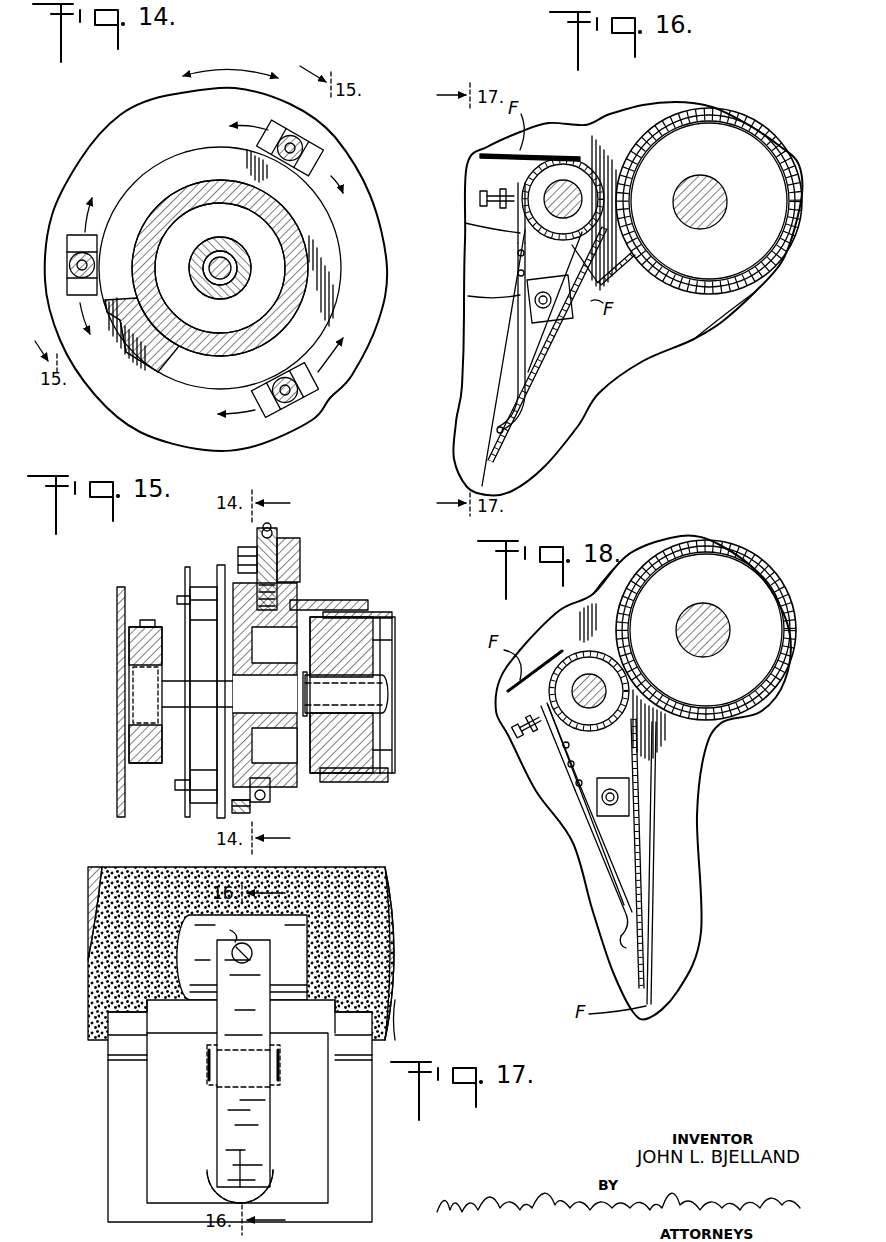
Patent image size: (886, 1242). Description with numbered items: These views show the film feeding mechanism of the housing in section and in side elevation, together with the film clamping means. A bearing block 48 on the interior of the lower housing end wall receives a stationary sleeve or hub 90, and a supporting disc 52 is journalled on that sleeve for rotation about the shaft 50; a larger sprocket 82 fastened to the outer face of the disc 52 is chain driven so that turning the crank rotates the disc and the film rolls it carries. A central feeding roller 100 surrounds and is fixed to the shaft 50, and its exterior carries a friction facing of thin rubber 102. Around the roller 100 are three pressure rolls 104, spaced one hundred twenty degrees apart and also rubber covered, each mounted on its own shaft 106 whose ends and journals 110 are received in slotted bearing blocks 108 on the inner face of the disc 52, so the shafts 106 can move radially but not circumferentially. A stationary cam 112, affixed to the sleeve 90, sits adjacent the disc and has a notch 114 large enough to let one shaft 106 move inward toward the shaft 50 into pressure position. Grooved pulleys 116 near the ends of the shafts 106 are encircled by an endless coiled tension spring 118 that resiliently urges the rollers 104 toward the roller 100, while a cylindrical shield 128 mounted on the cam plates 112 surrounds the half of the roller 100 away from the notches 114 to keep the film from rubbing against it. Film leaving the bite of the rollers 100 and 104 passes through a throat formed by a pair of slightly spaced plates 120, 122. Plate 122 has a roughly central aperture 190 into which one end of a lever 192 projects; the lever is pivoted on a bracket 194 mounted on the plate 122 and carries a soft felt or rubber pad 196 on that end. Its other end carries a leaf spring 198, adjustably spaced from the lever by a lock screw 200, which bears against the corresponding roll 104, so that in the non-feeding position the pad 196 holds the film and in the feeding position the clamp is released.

In FIG. 15, the bearing block 48 is at (150, 640).
In FIG. 14, the shaft 50 is at (216, 272).
In FIG. 15, the shaft 50 is at (388, 694).
In FIG. 16, the shaft 50 is at (726, 186).
In FIG. 18, the shaft 50 is at (708, 604).
In FIG. 14, the supporting disc 52 is at (362, 186).
In FIG. 15, the supporting disc 52 is at (188, 567).
In FIG. 16, the supporting disc 52 is at (650, 348).
In FIG. 18, the supporting disc 52 is at (698, 800).
In FIG. 15, the sprocket 82 is at (183, 812).
In FIG. 15, the stationary sleeve 90 is at (145, 668).
In FIG. 15, the central feeding roller 100 is at (394, 622).
In FIG. 16, the central feeding roller 100 is at (742, 132).
In FIG. 18, the central feeding roller 100 is at (770, 605).
In FIG. 17, the central feeding roller 100 is at (392, 994).
In FIG. 15, the friction facing 102 is at (372, 610).
In FIG. 16, the friction facing 102 is at (764, 134).
In FIG. 18, the friction facing 102 is at (754, 558).
In FIG. 17, the friction facing 102 is at (394, 906).
In FIG. 15, the pressure roll 104 is at (296, 562).
In FIG. 16, the pressure roll 104 is at (589, 153).
In FIG. 18, the pressure roll 104 is at (562, 642).
In FIG. 17, the pressure roll 104 is at (286, 948).
In FIG. 14, the roller shaft 106 is at (286, 150).
In FIG. 16, the roller shaft 106 is at (566, 204).
In FIG. 18, the roller shaft 106 is at (594, 692).
In FIG. 14, the slotted bearing block 108 is at (318, 146).
In FIG. 14, the journal 110 is at (76, 262).
In FIG. 15, the journal 110 is at (246, 548).
In FIG. 14, the stationary cam 112 is at (332, 288).
In FIG. 15, the stationary cam 112 is at (232, 585).
In FIG. 16, the stationary cam 112 is at (694, 320).
In FIG. 18, the stationary cam 112 is at (652, 552).
In FIG. 14, the notch 114 is at (122, 348).
In FIG. 15, the notch 114 is at (252, 812).
In FIG. 16, the notch 114 is at (607, 251).
In FIG. 18, the notch 114 is at (622, 682).
In FIG. 15, the grooved pulley 116 is at (268, 548).
In FIG. 15, the coiled tension spring 118 is at (268, 528).
In FIG. 16, the throat plate 120 is at (552, 372).
In FIG. 18, the throat plate 120 is at (656, 966).
In FIG. 17, the throat plate 120 is at (120, 1152).
In FIG. 16, the throat plate 122 is at (534, 386).
In FIG. 18, the throat plate 122 is at (637, 970).
In FIG. 17, the throat plate 122 is at (150, 1110).
In FIG. 15, the shield 128 is at (332, 601).
In FIG. 16, the aperture 190 is at (503, 372).
In FIG. 18, the aperture 190 is at (630, 882).
In FIG. 17, the aperture 190 is at (272, 1160).
In FIG. 16, the lever 192 is at (518, 300).
In FIG. 18, the lever 192 is at (600, 848).
In FIG. 17, the lever 192 is at (232, 1105).
In FIG. 16, the bracket 194 is at (574, 320).
In FIG. 18, the bracket 194 is at (622, 778).
In FIG. 17, the bracket 194 is at (276, 1060).
In FIG. 16, the pad 196 is at (497, 431).
In FIG. 18, the pad 196 is at (628, 936).
In FIG. 17, the pad 196 is at (232, 1196).
In FIG. 16, the leaf spring 198 is at (516, 236).
In FIG. 18, the leaf spring 198 is at (545, 748).
In FIG. 17, the leaf spring 198 is at (236, 946).
In FIG. 16, the lock screw 200 is at (480, 198).
In FIG. 18, the lock screw 200 is at (512, 729).
In FIG. 17, the lock screw 200 is at (250, 948).